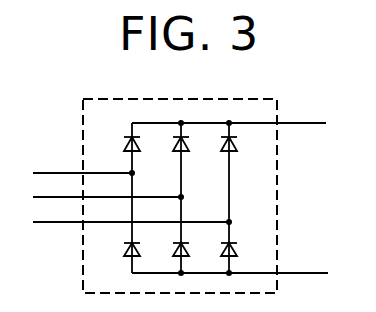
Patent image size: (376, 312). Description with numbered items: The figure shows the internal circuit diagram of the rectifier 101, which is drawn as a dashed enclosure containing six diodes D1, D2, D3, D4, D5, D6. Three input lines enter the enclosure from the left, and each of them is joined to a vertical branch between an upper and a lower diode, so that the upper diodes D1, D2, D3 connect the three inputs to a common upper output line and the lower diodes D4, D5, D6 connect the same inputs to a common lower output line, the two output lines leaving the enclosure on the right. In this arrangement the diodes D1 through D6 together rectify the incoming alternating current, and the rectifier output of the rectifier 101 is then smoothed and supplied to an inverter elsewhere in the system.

The rectifier 101 is at (226, 99).
The diode D1 is at (137, 152).
The diode D2 is at (186, 153).
The diode D3 is at (235, 153).
The diode D4 is at (125, 253).
The diode D5 is at (174, 254).
The diode D6 is at (237, 253).